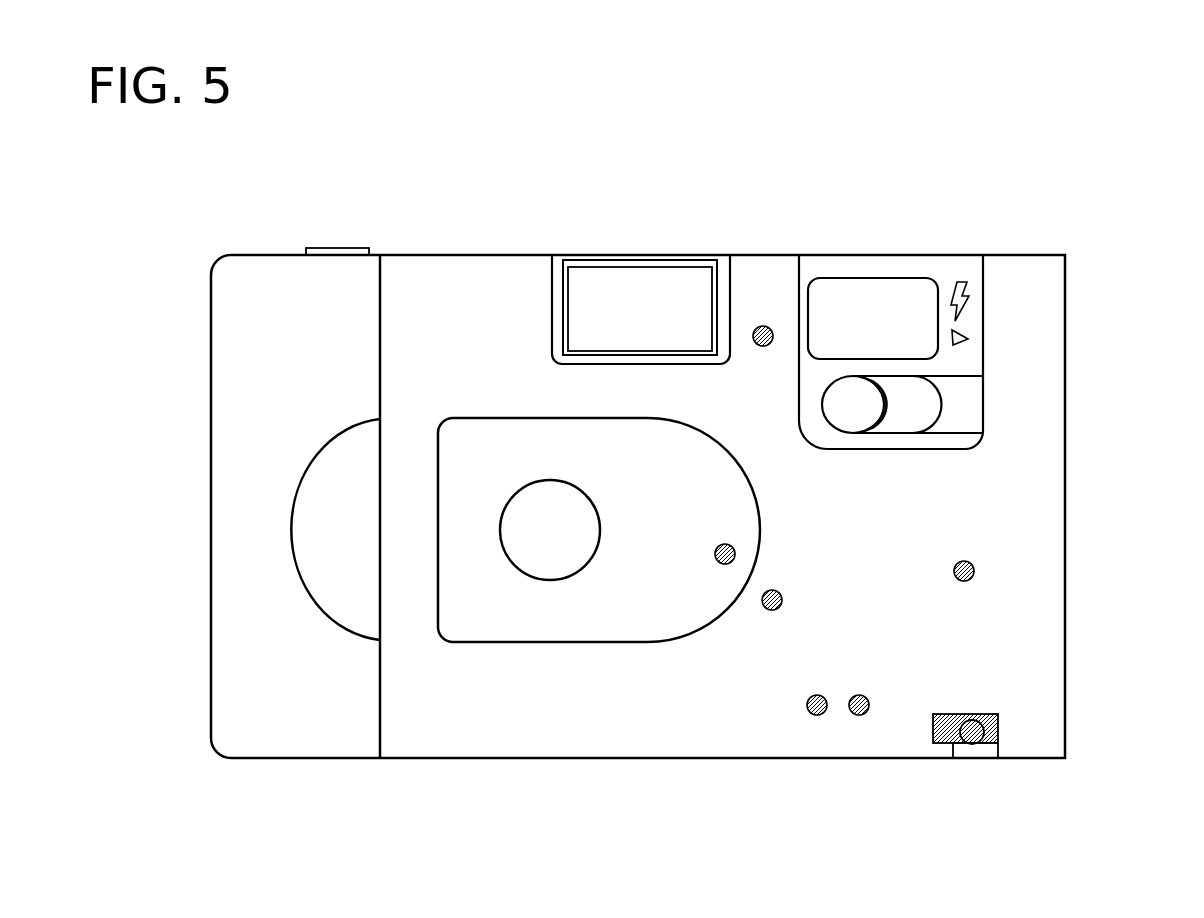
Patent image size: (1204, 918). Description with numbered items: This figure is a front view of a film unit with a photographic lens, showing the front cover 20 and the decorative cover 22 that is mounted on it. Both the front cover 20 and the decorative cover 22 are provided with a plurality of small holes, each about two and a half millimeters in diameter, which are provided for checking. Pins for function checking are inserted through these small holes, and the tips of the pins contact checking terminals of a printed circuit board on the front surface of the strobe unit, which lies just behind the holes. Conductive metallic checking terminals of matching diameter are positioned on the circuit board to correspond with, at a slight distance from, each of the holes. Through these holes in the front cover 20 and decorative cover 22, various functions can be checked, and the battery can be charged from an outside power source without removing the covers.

The front cover 20 is at (460, 707).
The decorative cover 22 is at (476, 450).